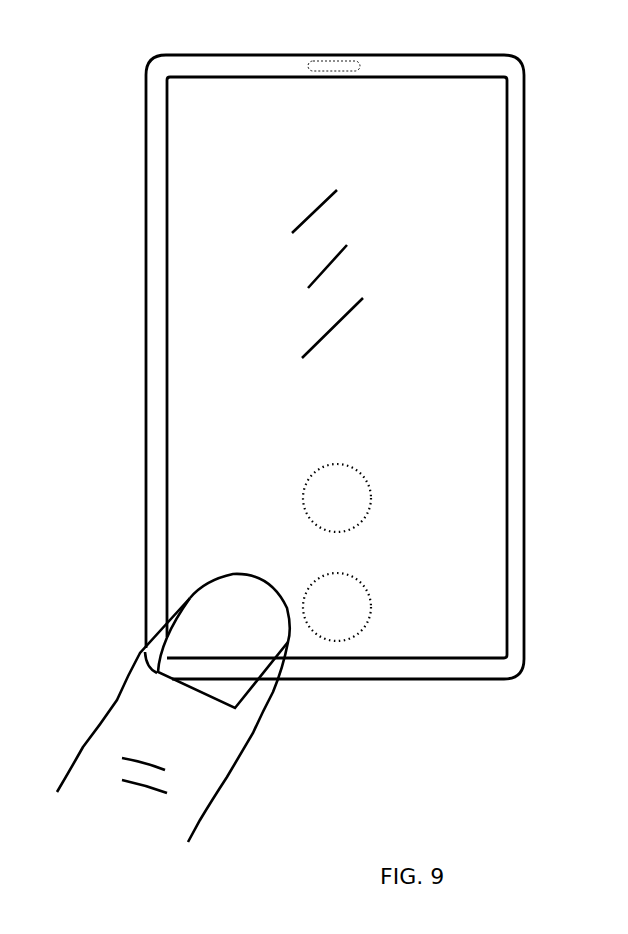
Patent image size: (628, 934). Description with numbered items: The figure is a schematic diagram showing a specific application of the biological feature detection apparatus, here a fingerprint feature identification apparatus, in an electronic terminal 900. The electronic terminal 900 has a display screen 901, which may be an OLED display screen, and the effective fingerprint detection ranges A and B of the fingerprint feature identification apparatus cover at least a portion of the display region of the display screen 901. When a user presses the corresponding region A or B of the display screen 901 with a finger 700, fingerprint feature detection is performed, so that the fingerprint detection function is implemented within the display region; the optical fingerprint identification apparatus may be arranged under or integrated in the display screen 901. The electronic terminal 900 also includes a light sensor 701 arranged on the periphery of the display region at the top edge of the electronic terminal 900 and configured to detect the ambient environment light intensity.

The electronic terminal 900 is at (125, 82).
The display screen 901 is at (432, 264).
The light sensor 701 is at (360, 58).
The finger 700 is at (250, 737).
The effective fingerprint detection range A is at (372, 499).
The effective fingerprint detection range B is at (334, 641).